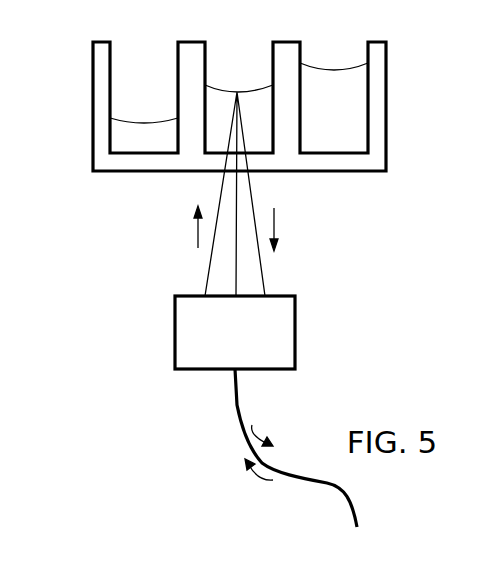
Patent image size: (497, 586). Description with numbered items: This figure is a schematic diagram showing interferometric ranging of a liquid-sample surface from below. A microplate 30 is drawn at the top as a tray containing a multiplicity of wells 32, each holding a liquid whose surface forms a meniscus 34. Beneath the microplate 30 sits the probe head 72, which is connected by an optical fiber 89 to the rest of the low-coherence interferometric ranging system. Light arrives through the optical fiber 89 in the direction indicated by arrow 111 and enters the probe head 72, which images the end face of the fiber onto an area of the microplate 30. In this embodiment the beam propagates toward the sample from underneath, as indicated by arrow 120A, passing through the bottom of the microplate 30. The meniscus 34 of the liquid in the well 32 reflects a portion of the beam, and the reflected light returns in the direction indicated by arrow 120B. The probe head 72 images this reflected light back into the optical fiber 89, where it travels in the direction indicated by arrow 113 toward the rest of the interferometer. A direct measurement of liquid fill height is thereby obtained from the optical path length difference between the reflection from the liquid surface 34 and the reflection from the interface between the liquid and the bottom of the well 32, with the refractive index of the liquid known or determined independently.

The microplate 30 is at (92, 122).
The wells 32 is at (283, 112).
The meniscus 34 is at (242, 90).
The probe head 72 is at (295, 343).
The optical fiber connecting Faraday rotator and probe head 89 is at (237, 413).
The arrow indicating direction of propagation of one beam in optical fiber 89 111 is at (258, 478).
The arrow indicating direction of propagation of one beam in optical fiber 89 113 is at (252, 425).
The arrow indicating direction of propagation of beam propagating towards the sample 120A is at (197, 230).
The arrow indicating direction of propagation of beam reflected by the sample 120B is at (280, 227).